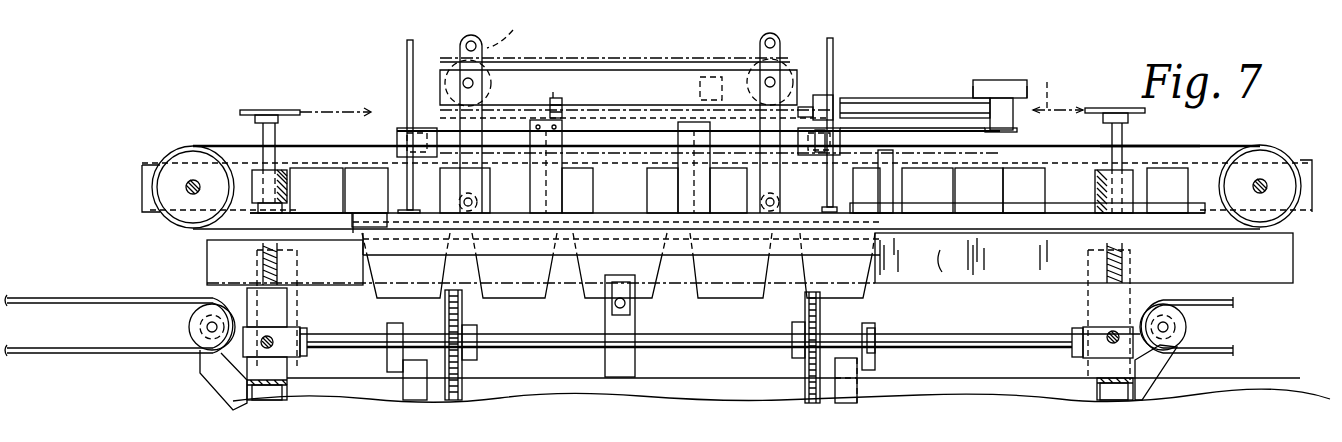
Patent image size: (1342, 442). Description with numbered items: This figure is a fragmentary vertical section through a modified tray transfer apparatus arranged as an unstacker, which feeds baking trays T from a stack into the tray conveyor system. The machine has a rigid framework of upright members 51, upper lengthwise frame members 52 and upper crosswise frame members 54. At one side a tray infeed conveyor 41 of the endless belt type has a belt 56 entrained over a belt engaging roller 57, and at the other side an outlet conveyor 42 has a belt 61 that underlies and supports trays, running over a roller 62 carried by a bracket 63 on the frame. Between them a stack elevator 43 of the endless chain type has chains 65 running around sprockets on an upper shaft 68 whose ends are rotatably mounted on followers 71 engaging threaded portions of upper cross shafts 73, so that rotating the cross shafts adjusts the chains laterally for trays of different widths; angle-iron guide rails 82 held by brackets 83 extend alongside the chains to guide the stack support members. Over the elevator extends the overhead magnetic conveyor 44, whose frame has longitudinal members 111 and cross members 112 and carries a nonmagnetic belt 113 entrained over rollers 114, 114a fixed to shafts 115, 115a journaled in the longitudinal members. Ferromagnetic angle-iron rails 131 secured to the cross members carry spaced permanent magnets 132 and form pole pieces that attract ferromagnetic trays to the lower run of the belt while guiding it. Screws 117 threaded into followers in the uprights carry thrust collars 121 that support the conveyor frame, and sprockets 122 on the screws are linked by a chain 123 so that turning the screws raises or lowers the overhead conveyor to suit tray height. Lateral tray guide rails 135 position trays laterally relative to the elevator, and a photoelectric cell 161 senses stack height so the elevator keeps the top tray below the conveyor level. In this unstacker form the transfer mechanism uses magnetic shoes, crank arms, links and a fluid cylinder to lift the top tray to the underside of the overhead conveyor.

The tray infeed conveyor 41 is at (1218, 306).
The outlet conveyor 42 is at (125, 297).
The stack elevator 43 is at (795, 367).
The overhead magnetic conveyor 44 is at (997, 236).
The upright members 51 is at (1140, 360).
The upper lengthwise extending frame member 52 is at (1005, 380).
The upper crosswise extending frame member 54 is at (1140, 381).
The belt 56 is at (1200, 300).
The belt engaging roller 57 is at (1178, 326).
The belt 61 is at (140, 354).
The belt engaging roller 62 is at (196, 327).
The bracket 63 is at (222, 384).
The endless chains 65 is at (455, 387).
The upper shaft 68 is at (537, 313).
The followers 71 is at (1085, 328).
The upper cross shafts 73 is at (1114, 333).
The guide rails 82 is at (850, 387).
The brackets 83 is at (870, 325).
The longitudinal members 111 is at (1224, 163).
The cross members 112 is at (283, 186).
The belt 113 is at (1140, 146).
The roller 114 is at (1257, 152).
The roller 114a is at (162, 185).
The shaft 115 is at (1263, 177).
The shaft 115a is at (192, 180).
The screws 117 is at (267, 242).
The thrust collars 121 is at (1110, 207).
The sprockets 122 is at (1100, 107).
The chain 123 is at (1060, 94).
The angle-iron rails 131 is at (912, 178).
The magnets 132 is at (987, 174).
The lateral tray guide rails 135 is at (958, 272).
The photoelectric cell 161 is at (628, 305).
The baking tray T is at (853, 268).